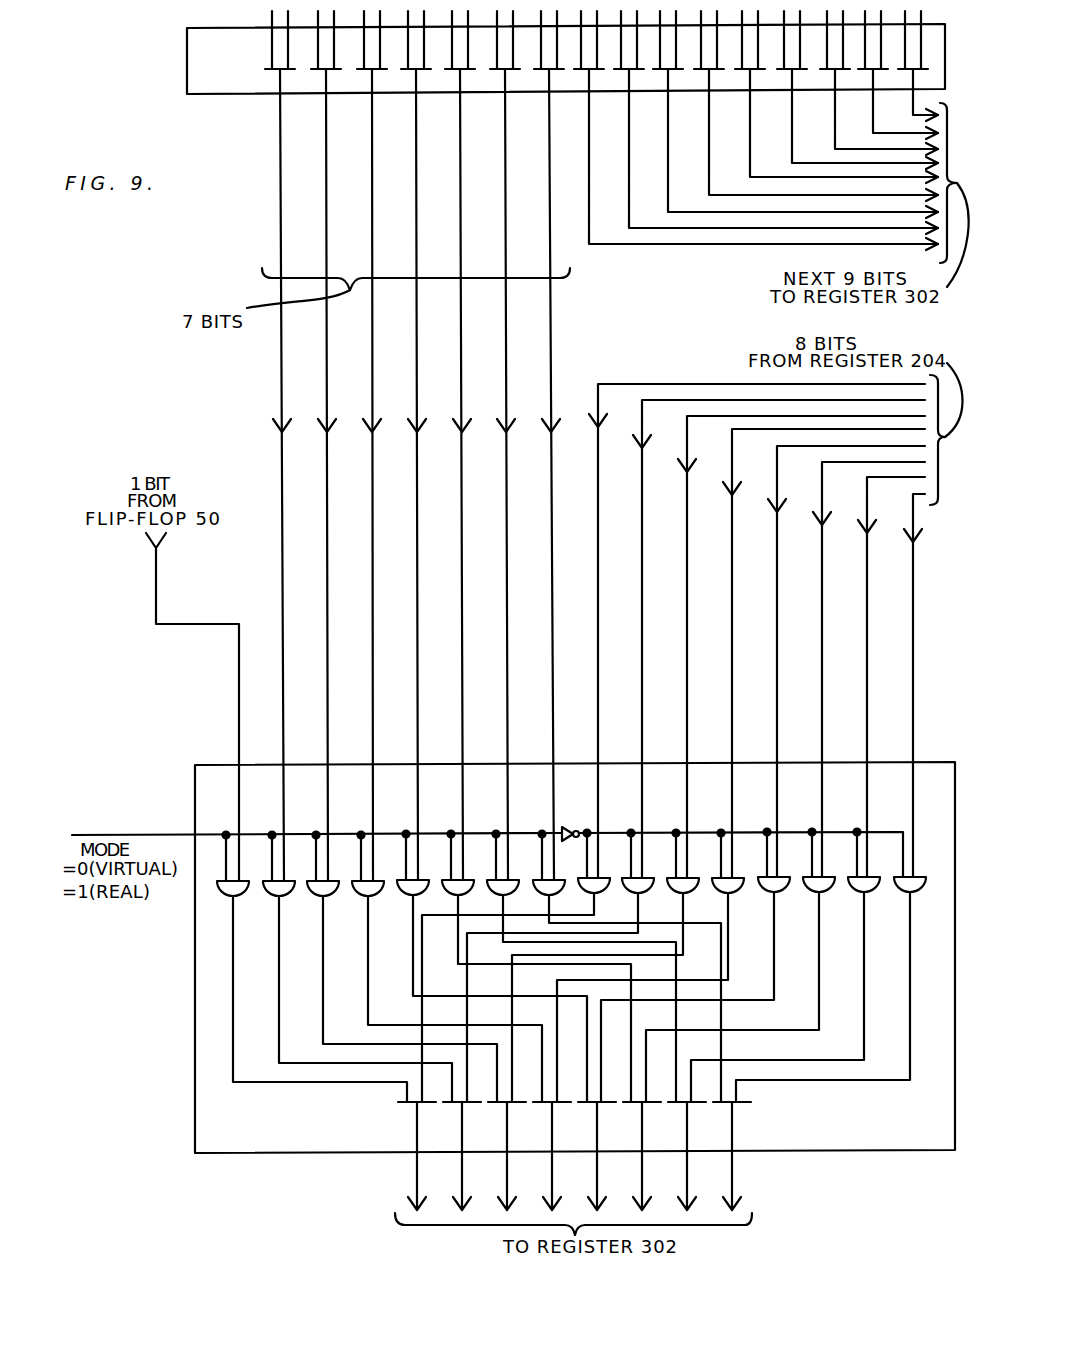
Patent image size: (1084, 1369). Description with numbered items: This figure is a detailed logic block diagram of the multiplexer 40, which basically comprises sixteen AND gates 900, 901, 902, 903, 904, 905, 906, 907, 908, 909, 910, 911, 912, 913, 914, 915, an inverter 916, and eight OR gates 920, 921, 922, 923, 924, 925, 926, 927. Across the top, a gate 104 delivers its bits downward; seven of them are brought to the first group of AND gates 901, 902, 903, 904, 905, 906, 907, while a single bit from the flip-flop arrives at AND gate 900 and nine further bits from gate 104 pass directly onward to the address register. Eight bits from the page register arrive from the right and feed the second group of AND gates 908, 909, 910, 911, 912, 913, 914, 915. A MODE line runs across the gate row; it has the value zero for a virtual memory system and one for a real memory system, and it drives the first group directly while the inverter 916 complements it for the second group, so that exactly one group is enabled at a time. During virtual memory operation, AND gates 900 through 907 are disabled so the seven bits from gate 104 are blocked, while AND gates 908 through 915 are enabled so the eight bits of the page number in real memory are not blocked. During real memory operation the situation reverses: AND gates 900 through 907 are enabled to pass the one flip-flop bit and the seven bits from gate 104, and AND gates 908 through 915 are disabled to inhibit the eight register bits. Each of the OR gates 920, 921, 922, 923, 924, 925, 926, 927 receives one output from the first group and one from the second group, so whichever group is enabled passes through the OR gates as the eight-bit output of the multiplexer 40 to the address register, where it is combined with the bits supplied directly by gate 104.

The gate 104 is at (185, 80).
The multiplexer 40 is at (955, 1068).
The AND gate 900 is at (227, 896).
The AND gate 901 is at (270, 897).
The AND gate 902 is at (316, 897).
The AND gate 903 is at (363, 897).
The AND gate 904 is at (407, 896).
The AND gate 905 is at (443, 880).
The AND gate 906 is at (493, 880).
The AND gate 907 is at (537, 880).
The AND gate 908 is at (607, 878).
The AND gate 909 is at (650, 878).
The AND gate 910 is at (695, 878).
The AND gate 911 is at (740, 878).
The AND gate 912 is at (763, 893).
The AND gate 913 is at (808, 893).
The AND gate 914 is at (853, 893).
The AND gate 915 is at (899, 893).
The inverter 916 is at (568, 827).
The OR gate 920 is at (405, 1104).
The OR gate 921 is at (452, 1104).
The OR gate 922 is at (494, 1104).
The OR gate 923 is at (540, 1104).
The OR gate 924 is at (584, 1104).
The OR gate 925 is at (630, 1104).
The OR gate 926 is at (675, 1104).
The OR gate 927 is at (720, 1104).